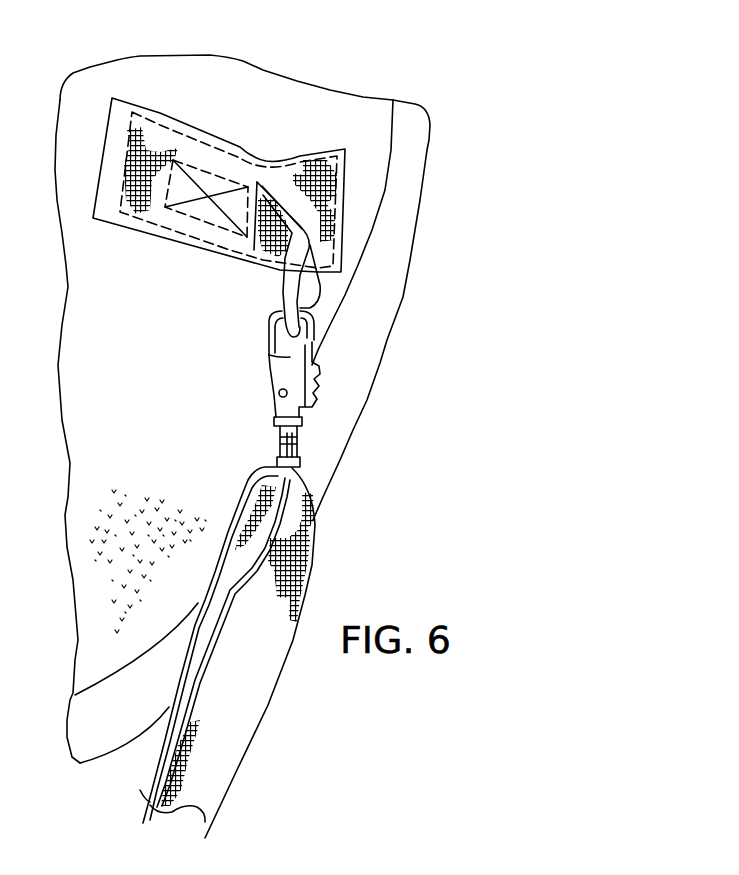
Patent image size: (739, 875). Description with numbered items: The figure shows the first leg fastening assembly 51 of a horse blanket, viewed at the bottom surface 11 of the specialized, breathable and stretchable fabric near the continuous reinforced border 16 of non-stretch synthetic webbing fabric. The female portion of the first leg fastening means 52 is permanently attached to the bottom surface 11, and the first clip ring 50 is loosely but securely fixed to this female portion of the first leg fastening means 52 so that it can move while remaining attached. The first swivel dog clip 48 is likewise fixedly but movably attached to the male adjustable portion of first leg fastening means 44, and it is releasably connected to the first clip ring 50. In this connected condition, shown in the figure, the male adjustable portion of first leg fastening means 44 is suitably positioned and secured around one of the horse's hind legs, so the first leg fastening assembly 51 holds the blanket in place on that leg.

The bottom surface 11 is at (225, 77).
The continuous reinforced border 16 is at (417, 150).
The female portion of the first leg fastening means 52 is at (257, 246).
The first clip ring 50 is at (283, 302).
The first swivel dog clip 48 is at (270, 358).
The first leg fastening assembly 51 is at (313, 285).
The male adjustable portion of first leg fastening means 44 is at (247, 700).